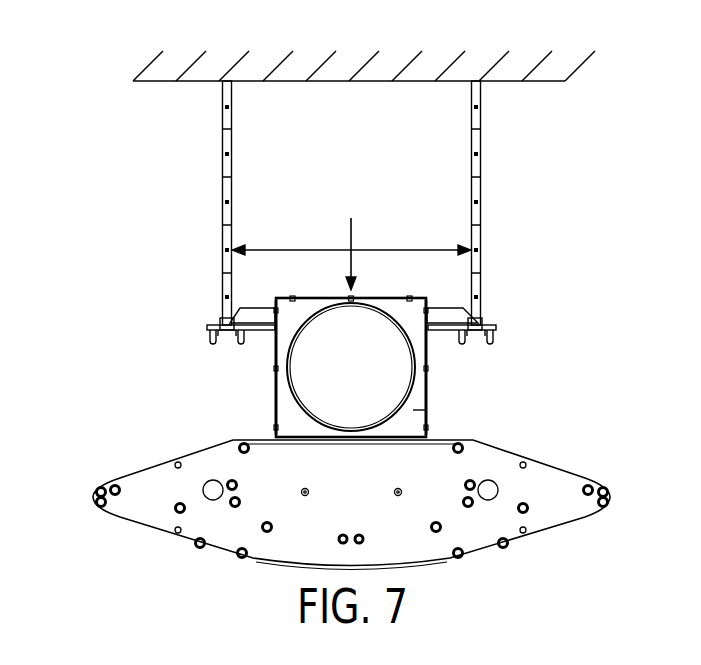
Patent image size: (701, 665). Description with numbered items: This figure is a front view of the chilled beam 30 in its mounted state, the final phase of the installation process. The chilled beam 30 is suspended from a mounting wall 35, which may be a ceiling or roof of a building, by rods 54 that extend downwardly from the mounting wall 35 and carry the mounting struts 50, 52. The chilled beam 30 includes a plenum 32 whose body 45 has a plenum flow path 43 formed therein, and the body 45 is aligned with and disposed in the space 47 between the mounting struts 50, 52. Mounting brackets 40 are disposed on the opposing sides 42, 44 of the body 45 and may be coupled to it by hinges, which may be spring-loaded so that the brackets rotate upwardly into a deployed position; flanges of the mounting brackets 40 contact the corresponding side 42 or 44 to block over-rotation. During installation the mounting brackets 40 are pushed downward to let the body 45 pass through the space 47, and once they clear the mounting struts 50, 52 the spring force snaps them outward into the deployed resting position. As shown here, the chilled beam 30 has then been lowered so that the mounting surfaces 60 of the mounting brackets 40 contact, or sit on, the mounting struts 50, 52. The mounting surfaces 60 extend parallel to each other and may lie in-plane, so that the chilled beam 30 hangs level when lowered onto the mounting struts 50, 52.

The chilled beam 30 is at (127, 552).
The plenum 32 is at (273, 413).
The mounting wall 35 is at (322, 82).
The mounting brackets 40 is at (252, 312).
The side 42 is at (428, 380).
The plenum flow path 43 is at (325, 400).
The side 44 is at (276, 384).
The body 45 is at (413, 410).
The space 47 is at (405, 250).
The mounting strut 50 is at (200, 335).
The mounting strut 52 is at (503, 335).
The rods 54 is at (227, 167).
The mounting surfaces 60 is at (248, 340).